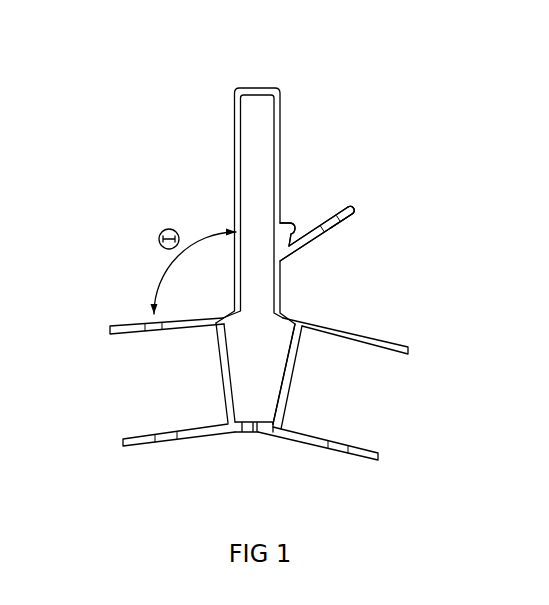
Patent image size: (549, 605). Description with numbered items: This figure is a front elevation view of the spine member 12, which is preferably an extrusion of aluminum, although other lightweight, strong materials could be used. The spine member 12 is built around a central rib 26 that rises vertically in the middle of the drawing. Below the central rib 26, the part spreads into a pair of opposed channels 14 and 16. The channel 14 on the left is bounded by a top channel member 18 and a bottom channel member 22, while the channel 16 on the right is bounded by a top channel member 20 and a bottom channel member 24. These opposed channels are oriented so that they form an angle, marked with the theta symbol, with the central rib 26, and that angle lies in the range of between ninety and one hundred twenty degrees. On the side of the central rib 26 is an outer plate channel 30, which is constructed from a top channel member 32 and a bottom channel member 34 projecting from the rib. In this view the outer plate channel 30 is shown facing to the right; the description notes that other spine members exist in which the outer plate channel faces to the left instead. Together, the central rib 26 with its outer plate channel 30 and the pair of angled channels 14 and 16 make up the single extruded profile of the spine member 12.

The spine member 12 is at (158, 172).
The channel 14 is at (158, 383).
The channel 16 is at (355, 395).
The top channel member 18 is at (125, 322).
The top channel member 20 is at (381, 337).
The bottom channel member 22 is at (137, 447).
The bottom channel member 24 is at (360, 462).
The central rib 26 is at (262, 92).
The outer plate channel 30 is at (349, 205).
The top channel member 32 is at (291, 221).
The bottom channel member 34 is at (353, 218).